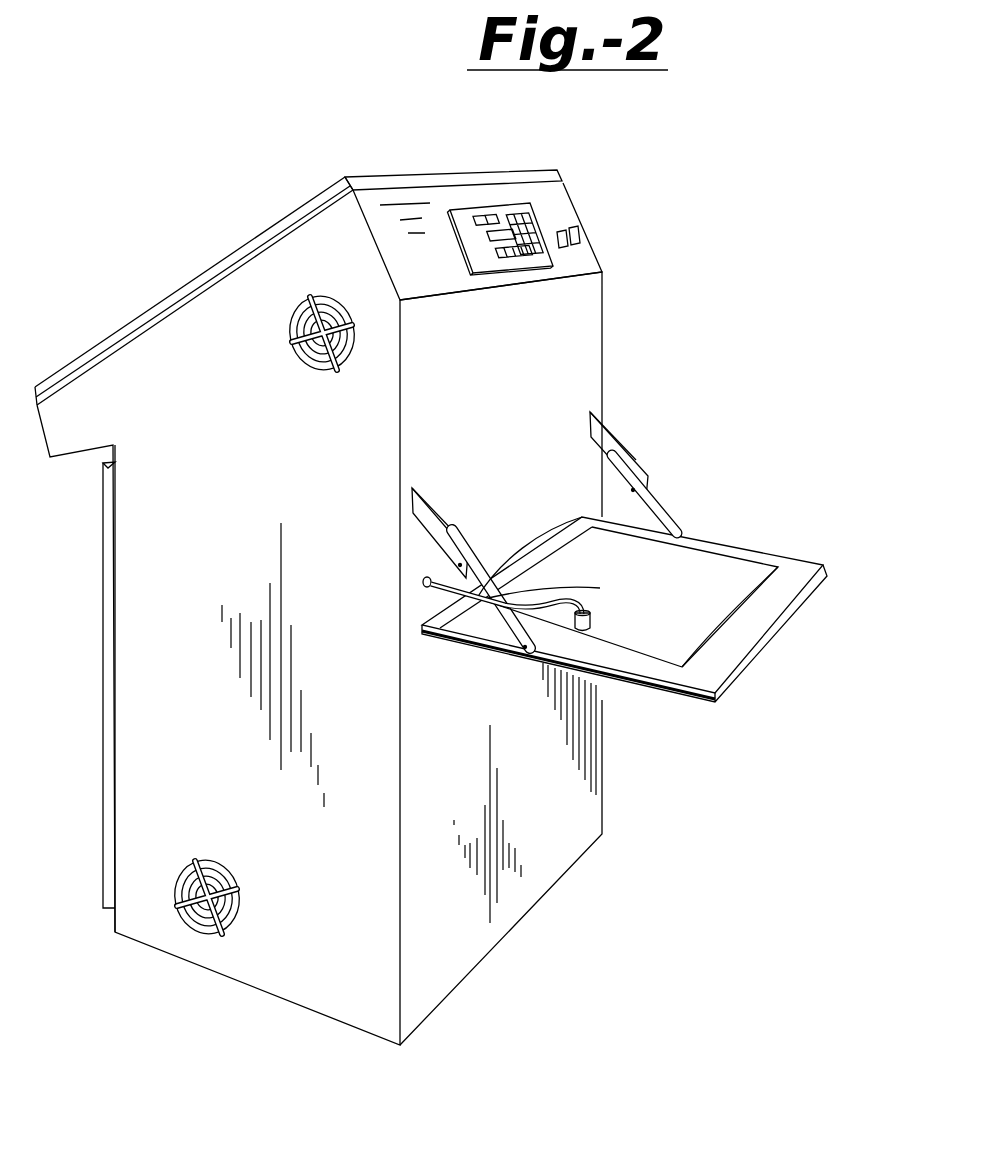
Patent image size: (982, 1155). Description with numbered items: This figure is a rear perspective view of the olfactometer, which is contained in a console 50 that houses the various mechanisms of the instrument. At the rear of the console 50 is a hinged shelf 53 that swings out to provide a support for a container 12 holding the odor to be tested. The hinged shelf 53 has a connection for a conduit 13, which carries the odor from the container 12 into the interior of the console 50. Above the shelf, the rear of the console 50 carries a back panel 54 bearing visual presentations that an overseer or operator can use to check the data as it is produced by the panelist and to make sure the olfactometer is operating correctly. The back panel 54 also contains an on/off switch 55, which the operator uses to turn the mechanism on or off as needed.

The console 50 is at (190, 272).
The back panel 54 is at (427, 200).
The on/off switch 55 is at (580, 232).
The hinged shelf 53 is at (753, 657).
The container 12 is at (692, 562).
The conduit 13 is at (552, 603).